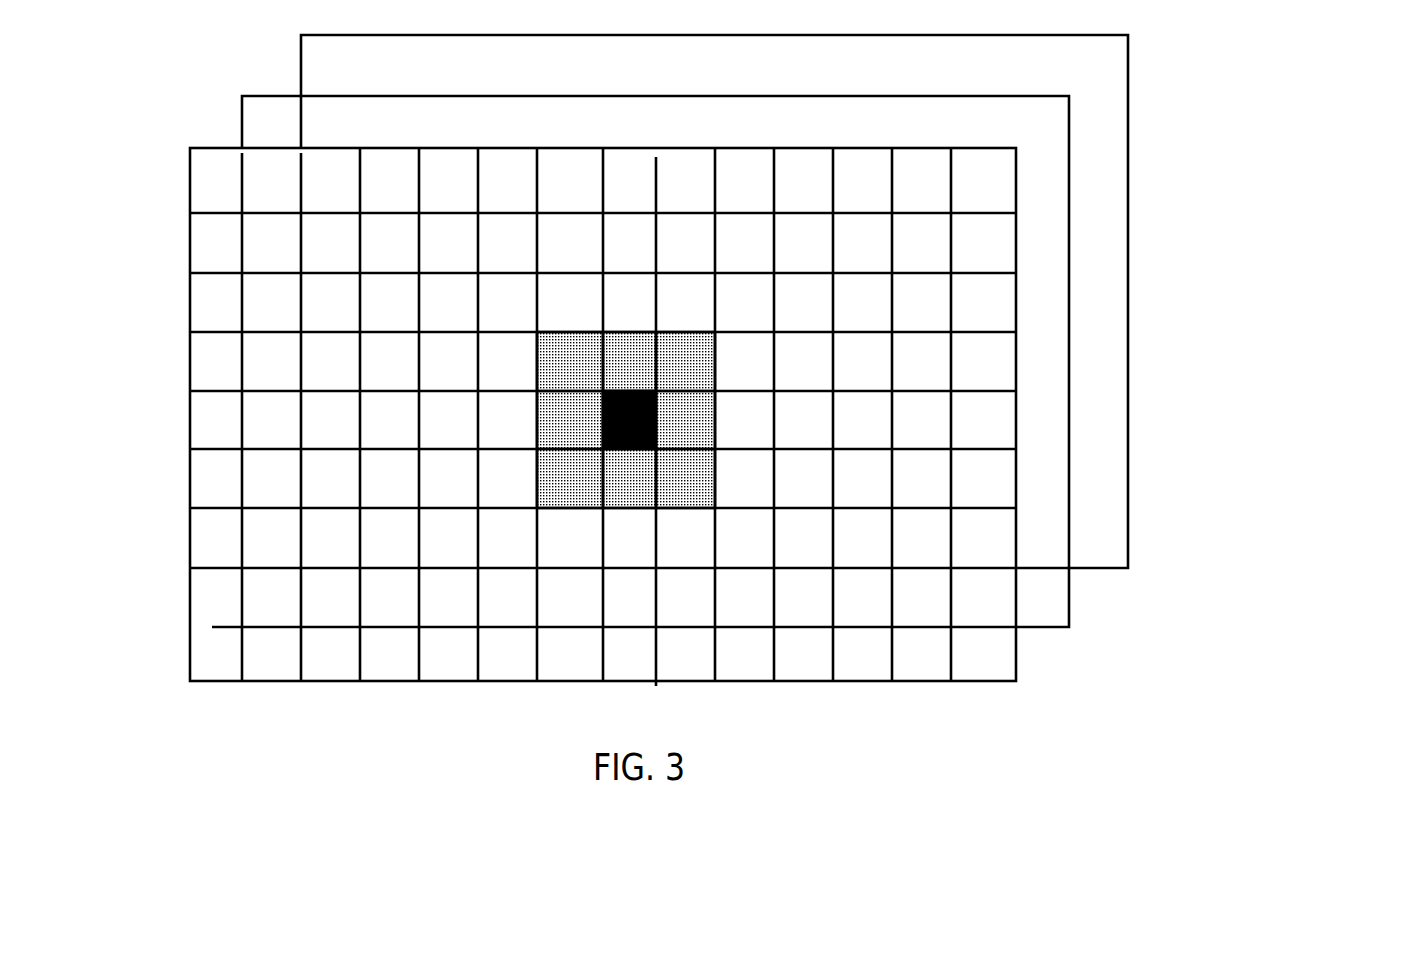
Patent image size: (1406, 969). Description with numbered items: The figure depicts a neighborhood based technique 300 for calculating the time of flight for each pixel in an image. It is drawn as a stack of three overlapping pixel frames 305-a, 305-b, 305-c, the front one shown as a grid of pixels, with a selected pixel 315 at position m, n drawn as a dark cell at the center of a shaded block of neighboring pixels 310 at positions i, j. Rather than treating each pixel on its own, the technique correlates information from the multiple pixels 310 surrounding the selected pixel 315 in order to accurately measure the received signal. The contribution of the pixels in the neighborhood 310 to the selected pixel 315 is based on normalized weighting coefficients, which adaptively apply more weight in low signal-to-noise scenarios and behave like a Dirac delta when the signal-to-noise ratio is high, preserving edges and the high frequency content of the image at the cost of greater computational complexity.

The neighborhood based technique 300 is at (1259, 737).
The first frame (image grid) 305-a is at (1016, 668).
The second frame 305-b is at (1069, 583).
The third frame 305-c is at (1128, 470).
The neighboring pixels 310 is at (570, 362).
The selected pixel 315 is at (600, 412).